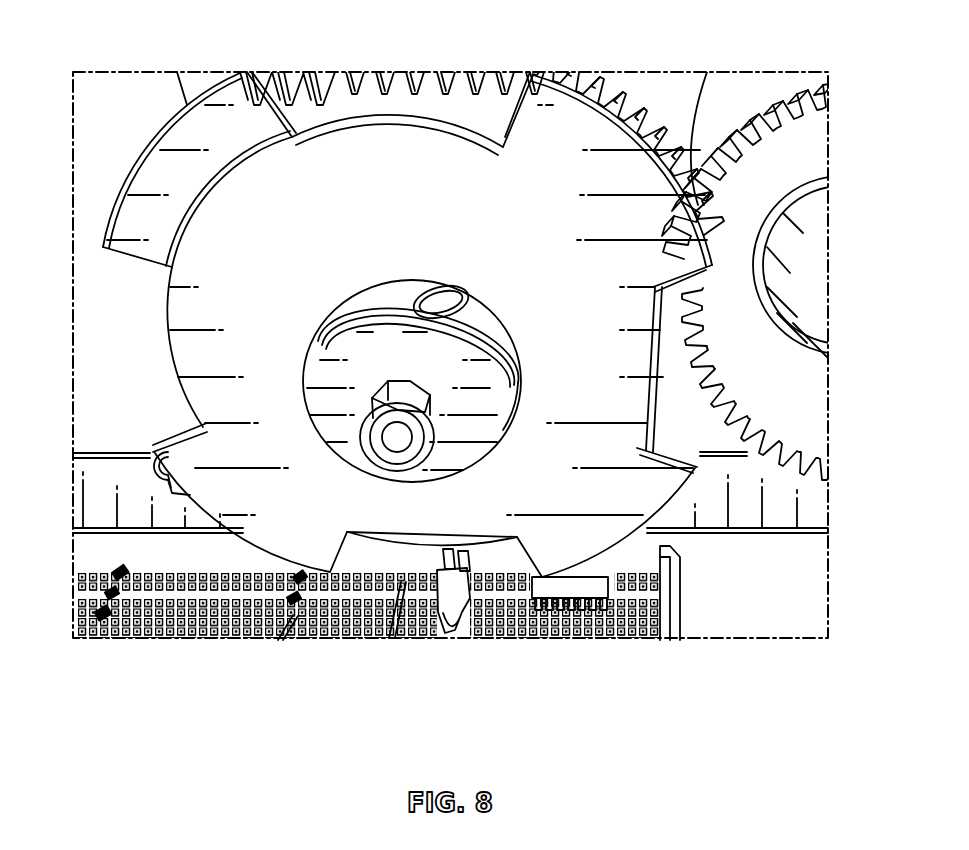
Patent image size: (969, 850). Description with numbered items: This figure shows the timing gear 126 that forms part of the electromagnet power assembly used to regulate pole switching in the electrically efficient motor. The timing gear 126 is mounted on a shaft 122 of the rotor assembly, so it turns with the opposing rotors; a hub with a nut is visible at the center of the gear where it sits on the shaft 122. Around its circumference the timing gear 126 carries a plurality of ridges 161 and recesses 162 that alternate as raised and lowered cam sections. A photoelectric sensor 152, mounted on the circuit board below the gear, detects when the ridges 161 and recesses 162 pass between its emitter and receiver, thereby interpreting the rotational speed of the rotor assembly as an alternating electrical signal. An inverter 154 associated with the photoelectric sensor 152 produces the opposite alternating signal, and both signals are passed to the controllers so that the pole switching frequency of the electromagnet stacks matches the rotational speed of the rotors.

The parallel shaft 122 is at (385, 440).
The timing gear 126 is at (160, 92).
The photoelectric sensor 152 is at (453, 603).
The inverter 154 is at (597, 588).
The ridges 161 is at (253, 120).
The recesses 162 is at (403, 120).